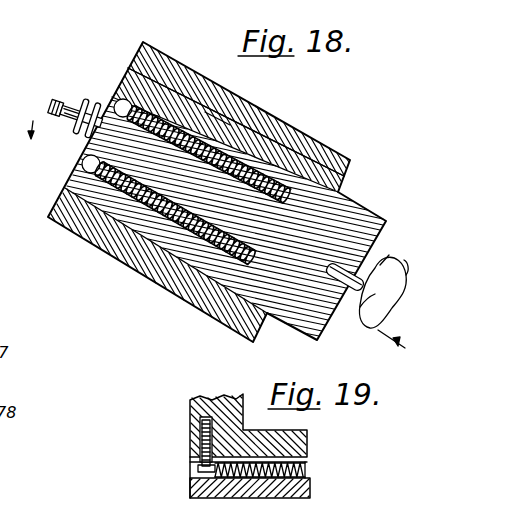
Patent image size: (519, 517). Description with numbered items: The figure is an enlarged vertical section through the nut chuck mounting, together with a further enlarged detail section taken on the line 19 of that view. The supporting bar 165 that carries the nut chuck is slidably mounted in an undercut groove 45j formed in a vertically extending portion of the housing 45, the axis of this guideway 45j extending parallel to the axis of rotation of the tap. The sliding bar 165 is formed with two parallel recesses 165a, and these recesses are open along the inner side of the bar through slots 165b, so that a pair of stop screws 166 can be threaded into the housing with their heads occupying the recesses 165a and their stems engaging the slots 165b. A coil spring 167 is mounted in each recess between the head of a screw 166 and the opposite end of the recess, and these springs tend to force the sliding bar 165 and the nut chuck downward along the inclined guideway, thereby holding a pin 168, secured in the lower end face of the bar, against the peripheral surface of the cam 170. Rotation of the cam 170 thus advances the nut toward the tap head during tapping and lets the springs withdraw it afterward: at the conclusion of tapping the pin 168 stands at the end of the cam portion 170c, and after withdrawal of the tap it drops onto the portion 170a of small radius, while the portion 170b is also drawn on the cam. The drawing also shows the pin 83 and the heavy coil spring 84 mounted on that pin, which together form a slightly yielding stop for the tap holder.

In FIG. 18, the housing 45 is at (348, 165).
In FIG. 18, the undercut groove 45j is at (215, 108).
In FIG. 18, the section line of FIG. 19 is at (220, 239).
In FIG. 18, the pin 83 is at (58, 100).
In FIG. 18, the coil spring 84 is at (84, 97).
In FIG. 18, the supporting bar 165 is at (298, 180).
In FIG. 19, the supporting bar 165 is at (190, 408).
In FIG. 18, the recesses 165a is at (238, 160).
In FIG. 18, the slots 165b is at (53, 153).
In FIG. 19, the slots 165b is at (190, 459).
In FIG. 18, the stop screws 166 is at (146, 78).
In FIG. 19, the stop screws 166 is at (197, 475).
In FIG. 18, the coil spring 167 is at (165, 96).
In FIG. 19, the coil spring 167 is at (307, 467).
In FIG. 18, the pin 168 is at (334, 266).
In FIG. 18, the cam 170 is at (394, 296).
In FIG. 18, the cam surface portion of small radius 170a is at (360, 317).
In FIG. 18, the cam nub 170b is at (393, 258).
In FIG. 18, the cam surface portion 170c is at (417, 252).